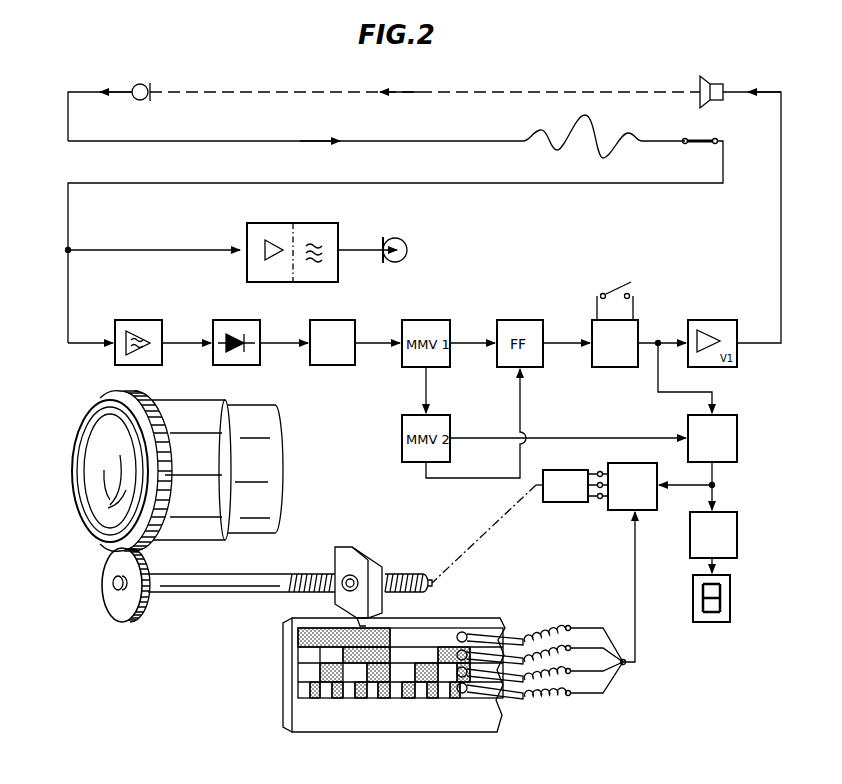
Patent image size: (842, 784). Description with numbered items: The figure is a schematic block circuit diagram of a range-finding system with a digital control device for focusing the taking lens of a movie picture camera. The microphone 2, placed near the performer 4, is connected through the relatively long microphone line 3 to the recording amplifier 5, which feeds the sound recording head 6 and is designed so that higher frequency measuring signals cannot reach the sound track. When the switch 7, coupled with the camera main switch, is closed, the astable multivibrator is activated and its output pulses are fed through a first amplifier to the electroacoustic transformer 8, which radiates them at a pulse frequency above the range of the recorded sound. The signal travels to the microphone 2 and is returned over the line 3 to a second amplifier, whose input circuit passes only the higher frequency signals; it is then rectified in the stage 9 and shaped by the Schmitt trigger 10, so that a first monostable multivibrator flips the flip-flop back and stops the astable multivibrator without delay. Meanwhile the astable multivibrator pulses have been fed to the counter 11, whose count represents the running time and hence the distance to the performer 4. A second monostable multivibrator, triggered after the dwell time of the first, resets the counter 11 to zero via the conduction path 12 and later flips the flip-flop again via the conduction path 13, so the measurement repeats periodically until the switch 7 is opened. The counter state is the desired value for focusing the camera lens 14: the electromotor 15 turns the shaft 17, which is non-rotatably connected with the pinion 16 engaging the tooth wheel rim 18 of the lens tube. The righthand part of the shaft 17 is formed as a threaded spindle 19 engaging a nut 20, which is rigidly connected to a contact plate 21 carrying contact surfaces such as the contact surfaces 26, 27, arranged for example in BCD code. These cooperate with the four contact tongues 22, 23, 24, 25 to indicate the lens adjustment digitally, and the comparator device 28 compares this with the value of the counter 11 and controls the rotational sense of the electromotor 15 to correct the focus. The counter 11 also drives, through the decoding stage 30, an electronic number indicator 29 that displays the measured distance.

The microphone 2 is at (134, 86).
The microphone line 3 is at (360, 140).
The performer 4 is at (115, 342).
The recording amplifier 5 is at (272, 232).
The sound recording head 6 is at (396, 240).
The switch 7 is at (612, 292).
The electroacoustic transformer 8 is at (720, 86).
The rectifier stage 9 is at (240, 326).
The Schmitt trigger 10 is at (335, 326).
The counter 11 is at (725, 434).
The conduction path 12 is at (573, 438).
The conduction path 13 is at (520, 417).
The camera lens 14 is at (78, 418).
The electromotor 15 is at (568, 496).
The pinion 16 is at (118, 608).
The shaft 17 is at (212, 590).
The tooth wheel rim 18 is at (145, 543).
The threaded spindle 19 is at (312, 574).
The nut 20 is at (370, 577).
The contact plate 21 is at (282, 700).
The contact tongue 22 is at (466, 696).
The contact tongue 23 is at (456, 690).
The contact tongue 24 is at (468, 638).
The contact tongue 25 is at (462, 650).
The contact surface 26 is at (360, 700).
The contact surface 27 is at (420, 662).
The comparator device 28 is at (626, 495).
The electronic number indicator 29 is at (731, 598).
The decoding stage 30 is at (726, 536).